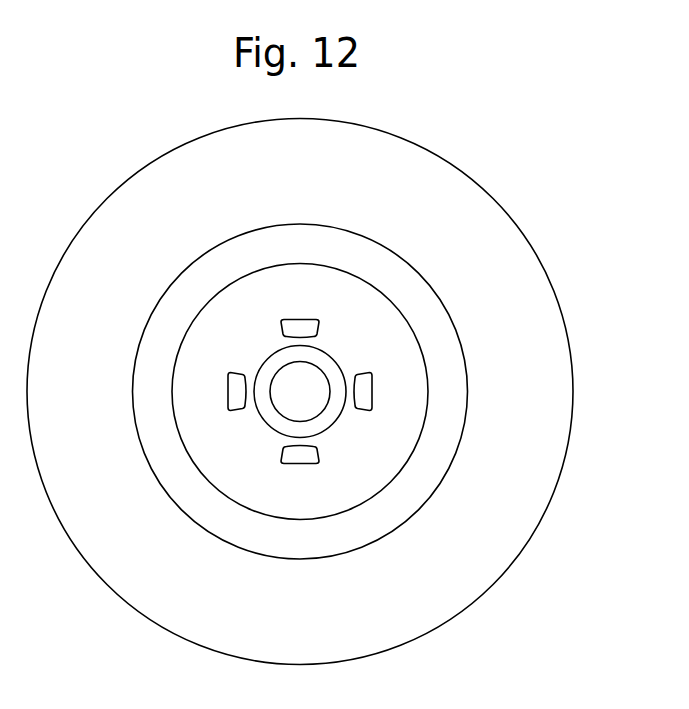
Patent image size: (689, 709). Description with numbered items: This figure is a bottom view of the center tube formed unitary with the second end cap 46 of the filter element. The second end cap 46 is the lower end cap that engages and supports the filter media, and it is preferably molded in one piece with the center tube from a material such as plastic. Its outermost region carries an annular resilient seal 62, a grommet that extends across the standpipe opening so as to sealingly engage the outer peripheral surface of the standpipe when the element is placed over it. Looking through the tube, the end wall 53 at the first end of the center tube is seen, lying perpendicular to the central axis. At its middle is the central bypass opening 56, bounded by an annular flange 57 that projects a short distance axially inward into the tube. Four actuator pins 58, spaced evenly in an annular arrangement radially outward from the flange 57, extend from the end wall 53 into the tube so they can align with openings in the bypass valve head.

The second end cap 46 is at (545, 267).
The annular resilient seal 62 is at (203, 255).
The end wall 53 is at (294, 282).
The annular flange 57 is at (268, 364).
The central bypass opening 56 is at (303, 420).
The actuator pins 58 is at (302, 318).